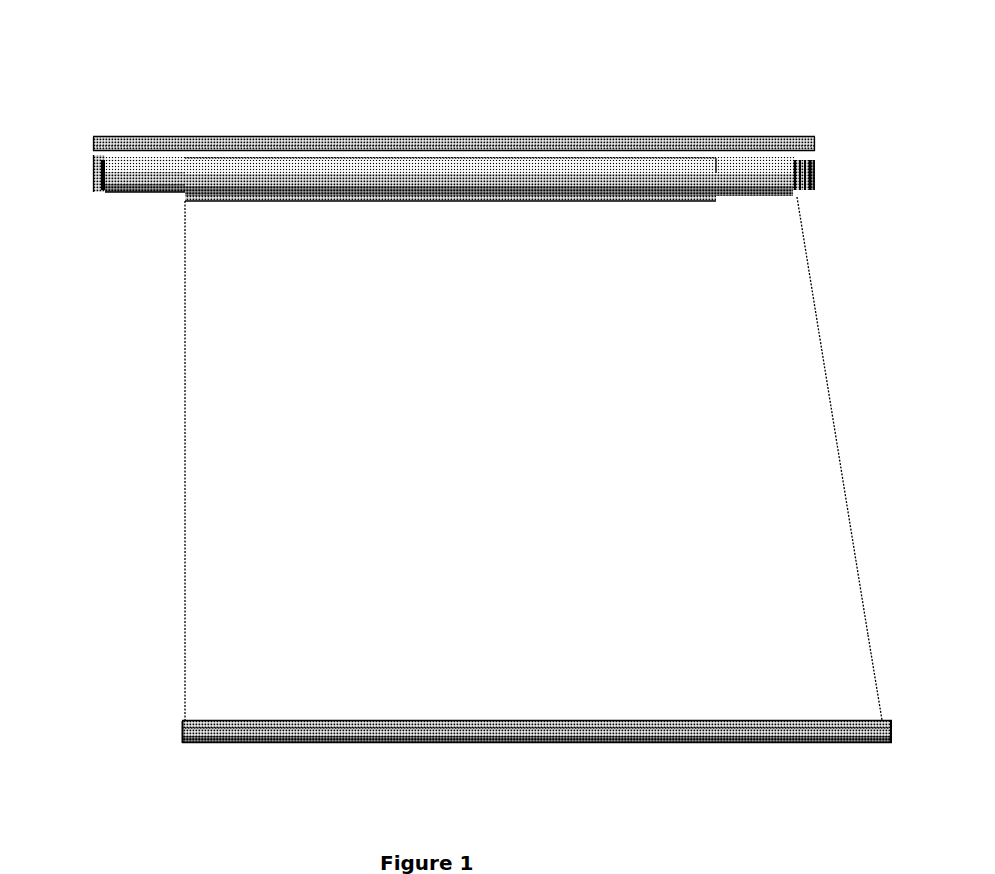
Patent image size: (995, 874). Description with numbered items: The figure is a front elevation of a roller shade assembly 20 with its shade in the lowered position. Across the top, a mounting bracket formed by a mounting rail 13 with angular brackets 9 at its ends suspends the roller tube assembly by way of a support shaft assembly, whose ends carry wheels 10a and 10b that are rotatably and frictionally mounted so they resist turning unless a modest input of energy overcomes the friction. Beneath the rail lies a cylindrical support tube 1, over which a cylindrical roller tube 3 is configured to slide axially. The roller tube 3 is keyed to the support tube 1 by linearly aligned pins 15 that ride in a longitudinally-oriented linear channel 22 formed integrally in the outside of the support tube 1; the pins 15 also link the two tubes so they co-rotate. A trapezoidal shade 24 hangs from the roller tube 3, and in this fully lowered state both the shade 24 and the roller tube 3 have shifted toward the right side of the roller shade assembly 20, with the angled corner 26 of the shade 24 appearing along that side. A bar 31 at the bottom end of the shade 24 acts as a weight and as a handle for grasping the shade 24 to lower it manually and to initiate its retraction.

The roller shade assembly 20 is at (602, 108).
The mounting rail 13 is at (472, 135).
The linear channel 22 is at (122, 148).
The pins 15 is at (235, 158).
The roller tube 3 is at (380, 170).
The support tube 1 is at (148, 175).
The wheel 10b is at (95, 167).
The wheel 10a is at (793, 180).
The angular brackets 9 is at (818, 182).
The shade 24 is at (840, 523).
The angled corner 26 is at (876, 708).
The bar 31 is at (745, 745).